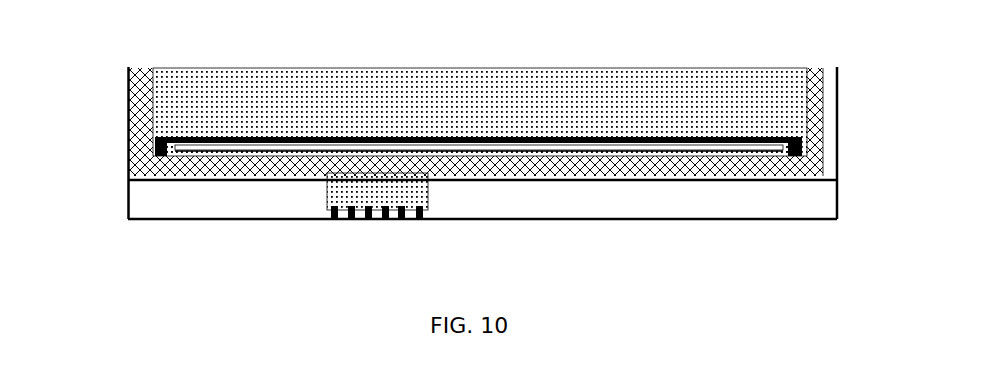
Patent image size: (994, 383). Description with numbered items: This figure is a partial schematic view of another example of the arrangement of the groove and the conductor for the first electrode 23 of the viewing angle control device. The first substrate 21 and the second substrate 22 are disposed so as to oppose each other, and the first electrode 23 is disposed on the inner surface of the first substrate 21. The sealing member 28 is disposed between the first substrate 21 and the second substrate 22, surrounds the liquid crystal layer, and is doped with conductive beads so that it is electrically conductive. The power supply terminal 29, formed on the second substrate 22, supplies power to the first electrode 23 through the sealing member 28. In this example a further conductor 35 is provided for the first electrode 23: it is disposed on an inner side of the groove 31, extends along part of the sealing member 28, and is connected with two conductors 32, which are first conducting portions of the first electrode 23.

The first substrate 21 is at (128, 165).
The second substrate 22 is at (197, 218).
The first electrode 23 is at (716, 92).
The sealing member 28 is at (145, 112).
The power supply terminal 29 is at (333, 220).
The groove 31 is at (190, 150).
The conductor 32 is at (157, 145).
The conductor 35 is at (762, 135).